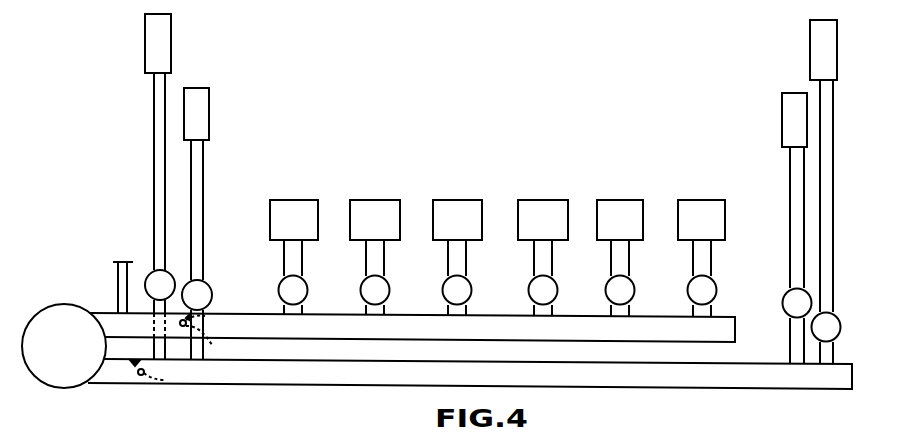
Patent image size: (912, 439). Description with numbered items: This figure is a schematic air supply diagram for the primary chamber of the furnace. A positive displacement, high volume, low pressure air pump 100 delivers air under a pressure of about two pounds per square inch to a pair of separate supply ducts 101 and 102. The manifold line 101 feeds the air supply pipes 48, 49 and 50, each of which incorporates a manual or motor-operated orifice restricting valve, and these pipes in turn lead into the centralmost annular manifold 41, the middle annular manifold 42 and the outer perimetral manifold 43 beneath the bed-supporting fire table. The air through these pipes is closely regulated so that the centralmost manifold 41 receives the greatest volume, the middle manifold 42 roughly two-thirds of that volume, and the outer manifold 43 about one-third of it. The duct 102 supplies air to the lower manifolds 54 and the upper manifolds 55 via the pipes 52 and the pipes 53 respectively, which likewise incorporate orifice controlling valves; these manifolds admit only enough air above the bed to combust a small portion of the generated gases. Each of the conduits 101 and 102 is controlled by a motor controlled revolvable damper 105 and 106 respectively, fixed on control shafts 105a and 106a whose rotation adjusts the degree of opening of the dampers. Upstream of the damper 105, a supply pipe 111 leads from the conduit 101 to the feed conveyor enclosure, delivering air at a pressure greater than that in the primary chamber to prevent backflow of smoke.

The centralmost annular manifold 41 is at (461, 192).
The middle annular manifold 42 is at (380, 192).
The outer perimetral manifold 43 is at (299, 192).
The air supply pipe 48 is at (533, 263).
The air supply pipe 49 is at (385, 263).
The air supply pipe 50 is at (303, 263).
The pipes 52 is at (213, 282).
The pipes 53 is at (155, 175).
The lower manifolds 54 is at (204, 106).
The upper manifolds 55 is at (166, 43).
The air pump 100 is at (52, 305).
The supply duct 101 is at (110, 320).
The supply duct 102 is at (344, 372).
The revolvable damper 105 is at (207, 316).
The control shaft 105a is at (196, 320).
The revolvable damper 106 is at (163, 382).
The control shaft 106a is at (138, 372).
The supply pipe 111 is at (118, 264).